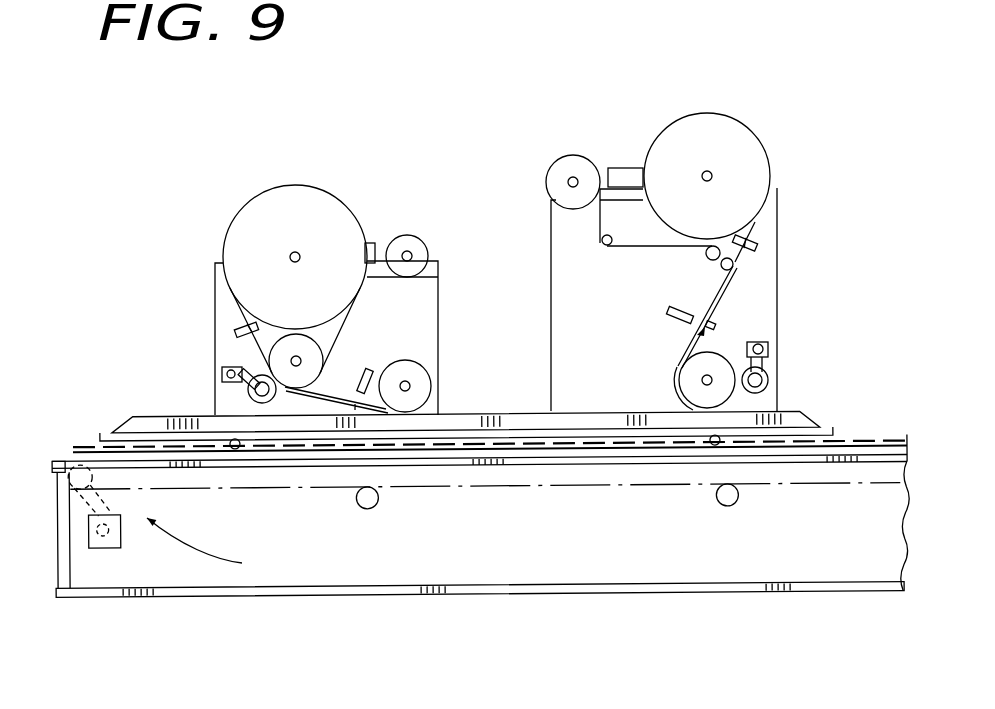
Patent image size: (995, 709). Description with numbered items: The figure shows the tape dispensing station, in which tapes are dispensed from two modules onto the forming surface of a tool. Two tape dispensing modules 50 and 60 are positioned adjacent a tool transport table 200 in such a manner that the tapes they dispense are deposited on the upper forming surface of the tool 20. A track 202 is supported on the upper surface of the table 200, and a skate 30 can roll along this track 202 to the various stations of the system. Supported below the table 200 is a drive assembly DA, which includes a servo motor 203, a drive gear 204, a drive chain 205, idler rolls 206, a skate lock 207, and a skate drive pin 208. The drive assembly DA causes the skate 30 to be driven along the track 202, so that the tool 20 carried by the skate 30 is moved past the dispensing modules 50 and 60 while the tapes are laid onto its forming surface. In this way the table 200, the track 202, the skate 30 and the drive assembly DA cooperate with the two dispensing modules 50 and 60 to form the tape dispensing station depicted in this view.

The dispensing module 50 is at (212, 200).
The dispensing module 60 is at (580, 127).
The tool 20 is at (127, 418).
The skate 30 is at (98, 433).
The tool transport table 200 is at (255, 610).
The track 202 is at (873, 445).
The servo motor 203 is at (120, 548).
The drive gear 204 is at (63, 461).
The drive chain 205 is at (192, 490).
The idler rolls 206 is at (377, 507).
The skate lock 207 is at (790, 453).
The skate drive pin 208 is at (803, 452).
The drive assembly DA is at (219, 548).